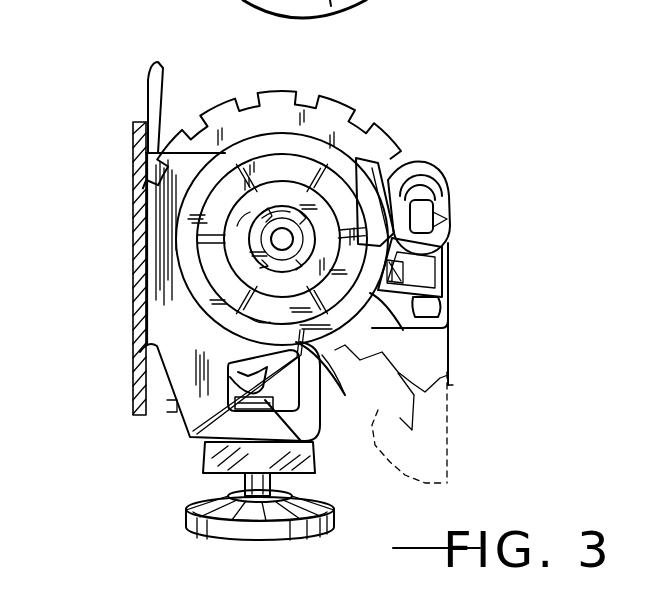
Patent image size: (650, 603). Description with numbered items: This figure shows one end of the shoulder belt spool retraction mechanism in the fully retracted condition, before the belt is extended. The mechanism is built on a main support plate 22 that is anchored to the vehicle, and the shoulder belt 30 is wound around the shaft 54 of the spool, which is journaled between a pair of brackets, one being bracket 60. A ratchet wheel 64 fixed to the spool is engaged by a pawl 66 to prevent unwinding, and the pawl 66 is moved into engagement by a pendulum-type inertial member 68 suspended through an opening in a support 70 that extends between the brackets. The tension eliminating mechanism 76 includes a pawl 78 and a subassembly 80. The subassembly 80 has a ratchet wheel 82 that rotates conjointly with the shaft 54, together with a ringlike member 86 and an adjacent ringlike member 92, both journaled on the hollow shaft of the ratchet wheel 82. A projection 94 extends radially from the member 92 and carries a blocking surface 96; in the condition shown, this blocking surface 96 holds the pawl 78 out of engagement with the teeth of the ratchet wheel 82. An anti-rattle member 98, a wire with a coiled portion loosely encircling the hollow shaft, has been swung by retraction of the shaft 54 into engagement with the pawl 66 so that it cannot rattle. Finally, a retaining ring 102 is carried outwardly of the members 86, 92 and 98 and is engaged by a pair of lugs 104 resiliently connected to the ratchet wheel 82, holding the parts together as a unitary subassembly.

The main support plate 22 is at (133, 138).
The shoulder belt 30 is at (147, 80).
The shaft 54 is at (365, 115).
The bracket 60 is at (180, 318).
The ratchet wheel 64 is at (283, 235).
The pawl 66 is at (300, 443).
The inertial member 68 is at (217, 533).
The support 70 is at (205, 455).
The tension eliminating mechanism 76 is at (489, 384).
The pawl 78 is at (438, 315).
The subassembly 80 is at (170, 257).
The ratchet wheel 82 is at (373, 221).
The ringlike member 86 is at (260, 218).
The ringlike member 92 is at (250, 318).
The projection 94 is at (450, 350).
The blocking surface 96 is at (442, 268).
The anti-rattle member 98 is at (322, 355).
The retaining ring 102 is at (237, 226).
The lugs 104 is at (258, 217).